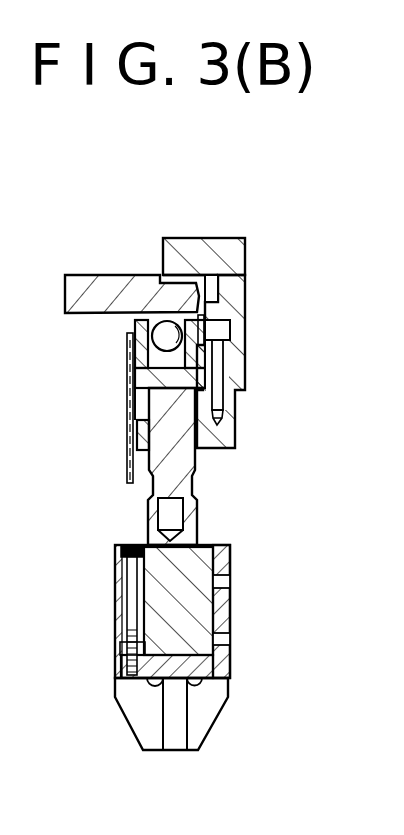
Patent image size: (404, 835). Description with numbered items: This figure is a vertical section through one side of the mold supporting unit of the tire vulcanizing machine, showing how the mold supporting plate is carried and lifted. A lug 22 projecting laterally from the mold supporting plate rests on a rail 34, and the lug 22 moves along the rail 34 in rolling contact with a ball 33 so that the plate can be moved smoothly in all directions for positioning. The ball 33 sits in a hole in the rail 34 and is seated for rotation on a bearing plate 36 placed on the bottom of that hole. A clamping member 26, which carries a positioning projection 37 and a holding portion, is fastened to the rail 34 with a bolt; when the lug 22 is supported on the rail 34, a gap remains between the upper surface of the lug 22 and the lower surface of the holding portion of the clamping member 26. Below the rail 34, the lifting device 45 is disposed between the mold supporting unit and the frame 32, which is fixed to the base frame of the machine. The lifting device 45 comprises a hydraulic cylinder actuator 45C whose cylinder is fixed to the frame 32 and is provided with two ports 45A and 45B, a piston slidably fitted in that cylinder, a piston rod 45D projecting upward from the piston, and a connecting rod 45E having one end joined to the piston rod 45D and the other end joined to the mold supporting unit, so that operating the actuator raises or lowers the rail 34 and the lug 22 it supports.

The lug 22 is at (135, 282).
The clamping member 26 is at (210, 238).
The frame 32 is at (202, 718).
The ball 33 is at (160, 333).
The rail 34 is at (245, 338).
The bearing plate 36 is at (140, 357).
The positioning projection 37 is at (218, 298).
The lifting device 45 is at (220, 600).
The port 45A is at (217, 582).
The port 45B is at (226, 640).
The hydraulic cylinder actuator 45C is at (183, 613).
The piston rod 45D is at (195, 525).
The connecting rod 45E is at (197, 460).